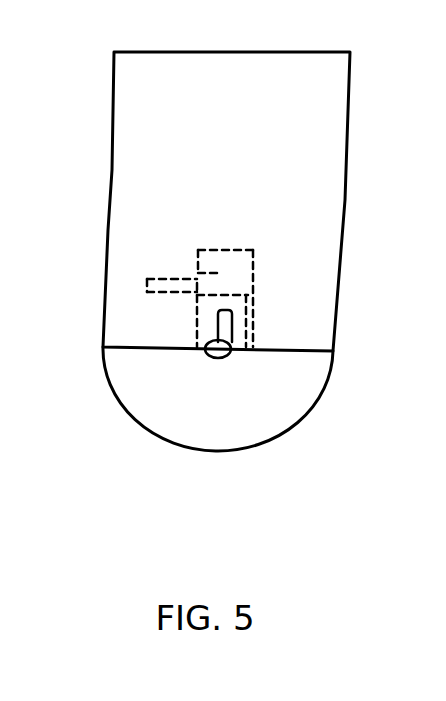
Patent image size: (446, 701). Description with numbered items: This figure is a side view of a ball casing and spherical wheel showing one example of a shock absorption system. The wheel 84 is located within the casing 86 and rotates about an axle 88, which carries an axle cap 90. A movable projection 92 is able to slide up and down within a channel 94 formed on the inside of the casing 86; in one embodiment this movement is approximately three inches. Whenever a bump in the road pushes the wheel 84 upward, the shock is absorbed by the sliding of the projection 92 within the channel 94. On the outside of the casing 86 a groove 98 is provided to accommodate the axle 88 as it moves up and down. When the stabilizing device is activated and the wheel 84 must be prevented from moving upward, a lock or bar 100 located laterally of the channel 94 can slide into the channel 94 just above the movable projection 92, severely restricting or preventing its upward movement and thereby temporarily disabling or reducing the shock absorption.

The wheel 84 is at (312, 373).
The casing 86 is at (322, 176).
The axle 88 is at (210, 356).
The axle cap 90 is at (236, 354).
The movable projection 92 is at (243, 324).
The channel 94 is at (246, 246).
The groove 98 is at (220, 312).
The lock or bar 100 is at (147, 288).